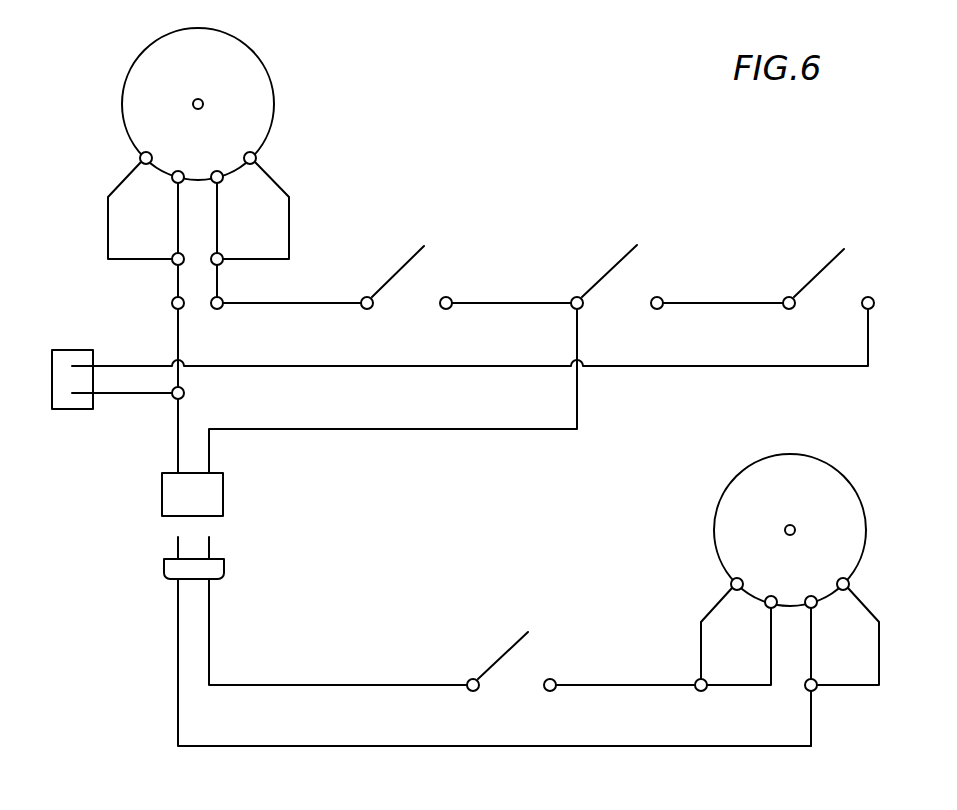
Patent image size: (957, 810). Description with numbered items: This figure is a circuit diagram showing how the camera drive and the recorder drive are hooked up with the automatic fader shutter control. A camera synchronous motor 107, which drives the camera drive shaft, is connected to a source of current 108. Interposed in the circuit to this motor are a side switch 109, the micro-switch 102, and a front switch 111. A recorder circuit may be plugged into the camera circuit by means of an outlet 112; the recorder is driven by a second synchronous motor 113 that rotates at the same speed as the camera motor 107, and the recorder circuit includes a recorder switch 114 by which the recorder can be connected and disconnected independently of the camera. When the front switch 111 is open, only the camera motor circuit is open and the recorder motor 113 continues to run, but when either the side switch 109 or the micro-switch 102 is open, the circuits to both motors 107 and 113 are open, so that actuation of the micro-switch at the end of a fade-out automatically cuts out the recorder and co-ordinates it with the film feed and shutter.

The synchronous motor 107 is at (257, 96).
The source of current 108 is at (80, 400).
The outlet 112 is at (167, 499).
The front switch 111 is at (408, 298).
The micro-switch 102 is at (617, 297).
The side switch 109 is at (843, 300).
The synchronous motor 113 is at (855, 540).
The recorder switch 114 is at (517, 682).